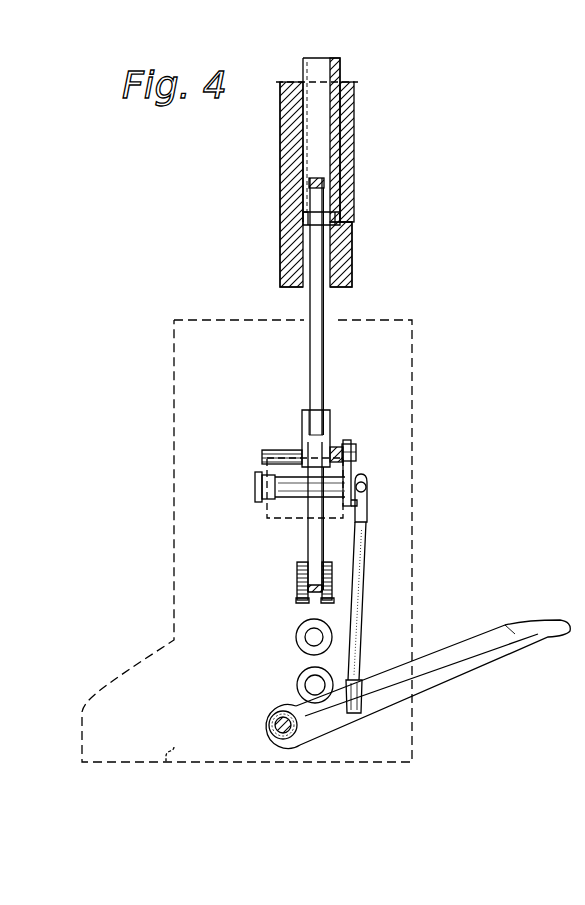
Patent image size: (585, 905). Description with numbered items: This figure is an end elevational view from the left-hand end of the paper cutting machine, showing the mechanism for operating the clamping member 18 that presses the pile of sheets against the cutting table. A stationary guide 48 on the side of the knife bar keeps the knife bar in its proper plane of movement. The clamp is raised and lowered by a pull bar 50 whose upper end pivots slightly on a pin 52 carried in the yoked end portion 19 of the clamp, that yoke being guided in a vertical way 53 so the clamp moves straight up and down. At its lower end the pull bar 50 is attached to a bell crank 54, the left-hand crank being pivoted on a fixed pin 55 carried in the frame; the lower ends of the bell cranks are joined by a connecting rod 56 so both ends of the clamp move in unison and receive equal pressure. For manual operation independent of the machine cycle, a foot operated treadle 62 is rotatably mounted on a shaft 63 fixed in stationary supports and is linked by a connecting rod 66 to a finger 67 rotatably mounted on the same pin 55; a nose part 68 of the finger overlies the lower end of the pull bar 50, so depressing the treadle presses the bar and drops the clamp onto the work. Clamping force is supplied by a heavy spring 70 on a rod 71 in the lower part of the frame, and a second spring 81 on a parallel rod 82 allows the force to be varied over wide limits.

The clamping member 18 is at (320, 64).
The stationary guide 48 is at (302, 214).
The pin 52 is at (326, 187).
The yoked end portion 19 is at (330, 216).
The vertical way 53 is at (333, 272).
The pull bar 50 is at (312, 302).
The fixed pin 55 is at (277, 478).
The nose part 68 is at (349, 445).
The finger 67 is at (352, 471).
The bell crank 54 is at (308, 537).
The connecting rod 56 is at (301, 569).
The connecting rod 66 is at (364, 554).
The heavy spring 70 is at (302, 626).
The rod 71 is at (310, 637).
The second spring 81 is at (303, 674).
The rod 82 is at (310, 686).
The shaft 63 is at (270, 722).
The foot operated treadle 62 is at (552, 626).